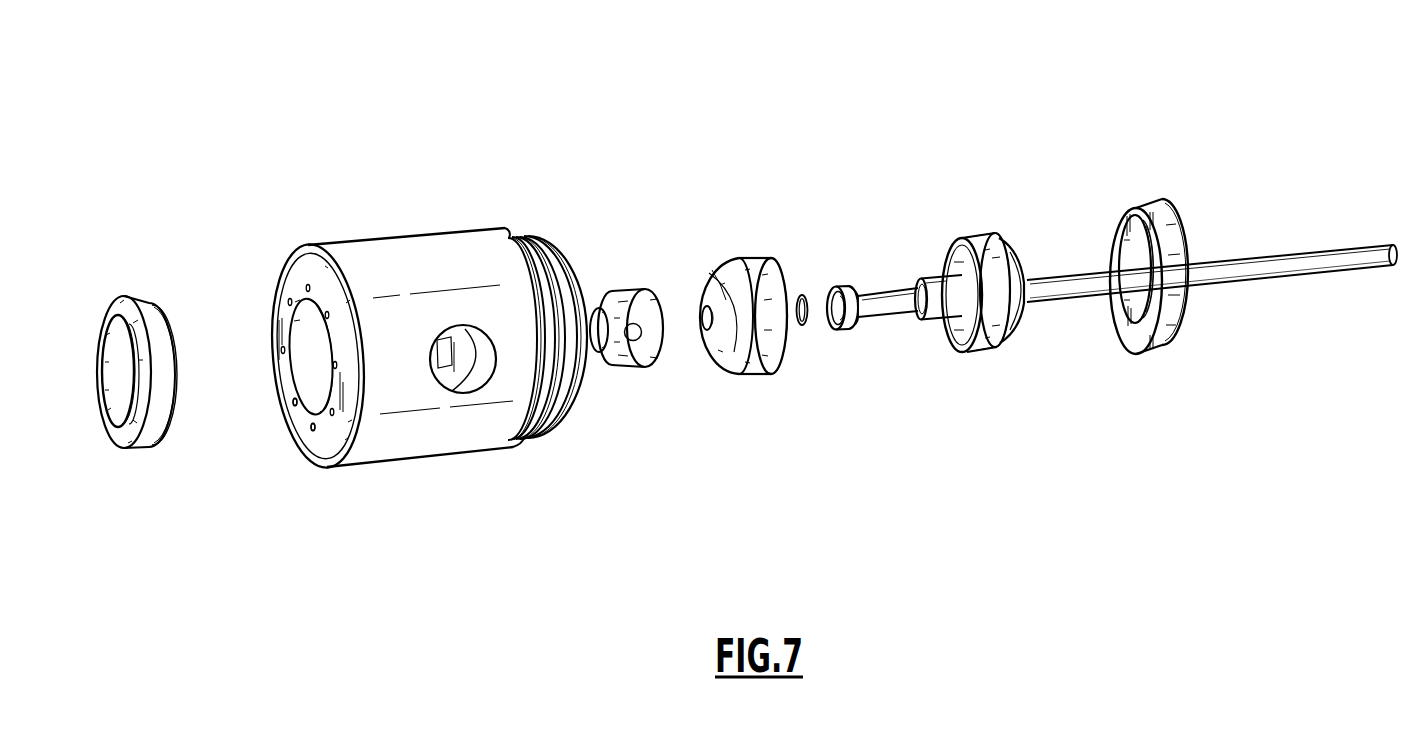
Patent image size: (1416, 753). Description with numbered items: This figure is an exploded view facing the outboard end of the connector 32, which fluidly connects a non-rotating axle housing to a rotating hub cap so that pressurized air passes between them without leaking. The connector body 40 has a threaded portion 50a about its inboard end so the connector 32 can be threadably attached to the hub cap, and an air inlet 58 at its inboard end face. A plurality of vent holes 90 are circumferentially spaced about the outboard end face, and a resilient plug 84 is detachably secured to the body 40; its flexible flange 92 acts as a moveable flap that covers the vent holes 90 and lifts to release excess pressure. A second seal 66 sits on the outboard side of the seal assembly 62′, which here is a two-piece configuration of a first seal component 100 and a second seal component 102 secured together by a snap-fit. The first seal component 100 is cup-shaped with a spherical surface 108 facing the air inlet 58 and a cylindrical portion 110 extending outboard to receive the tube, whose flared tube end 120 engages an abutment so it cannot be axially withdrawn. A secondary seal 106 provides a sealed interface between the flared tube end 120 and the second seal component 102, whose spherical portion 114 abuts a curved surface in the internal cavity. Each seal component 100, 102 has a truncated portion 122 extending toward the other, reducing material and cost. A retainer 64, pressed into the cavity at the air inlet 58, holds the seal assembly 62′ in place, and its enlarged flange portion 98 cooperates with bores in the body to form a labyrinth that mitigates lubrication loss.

The connector 32 is at (1115, 70).
The connector body 40 is at (378, 268).
The threaded portion 50a is at (549, 439).
The air inlet 58 is at (579, 279).
The seal assembly 62′ is at (720, 498).
The retainer 64 is at (1140, 352).
The second seal 66 is at (639, 358).
The plug 84 is at (127, 324).
The vent holes 90 is at (297, 406).
The flexible flange 92 is at (147, 448).
The flange portion 98 is at (1170, 349).
The first seal component 100 is at (991, 343).
The second seal component 102 is at (755, 374).
The secondary seal 106 is at (803, 295).
The spherical surface 108 is at (1022, 320).
The cylindrical portion 110 is at (941, 289).
The spherical portion 114 is at (733, 351).
The flared tube end 120 is at (840, 331).
The truncated portion 122 is at (753, 266).